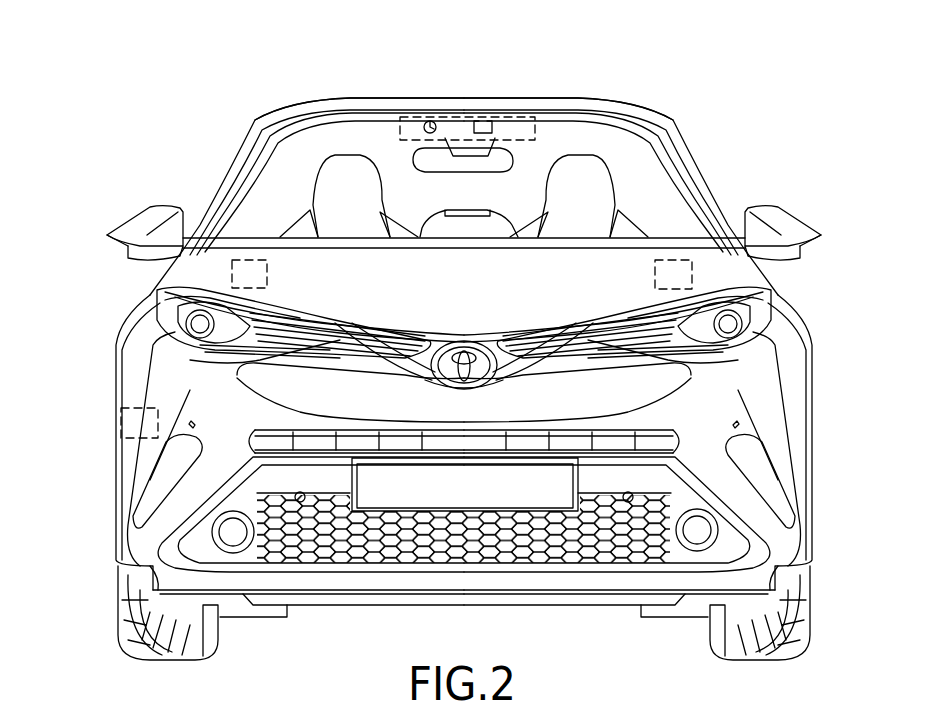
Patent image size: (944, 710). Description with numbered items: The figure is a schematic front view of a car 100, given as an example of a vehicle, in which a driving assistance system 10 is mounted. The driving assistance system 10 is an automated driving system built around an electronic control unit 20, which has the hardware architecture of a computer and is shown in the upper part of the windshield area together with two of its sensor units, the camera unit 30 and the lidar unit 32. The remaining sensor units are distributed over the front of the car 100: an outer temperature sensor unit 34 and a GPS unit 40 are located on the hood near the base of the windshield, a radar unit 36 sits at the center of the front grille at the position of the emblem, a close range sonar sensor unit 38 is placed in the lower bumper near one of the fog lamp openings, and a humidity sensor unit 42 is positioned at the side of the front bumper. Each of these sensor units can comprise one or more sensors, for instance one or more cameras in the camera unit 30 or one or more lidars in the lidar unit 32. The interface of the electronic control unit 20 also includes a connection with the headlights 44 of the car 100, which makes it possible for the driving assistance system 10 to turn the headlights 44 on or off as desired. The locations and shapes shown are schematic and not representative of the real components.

The car 100 is at (125, 97).
The driving assistance system 10 is at (245, 130).
The electronic control unit 20 is at (543, 137).
The camera unit 30 is at (427, 116).
The lidar unit 32 is at (484, 118).
The outer temperature sensor unit 34 is at (668, 279).
The radar unit 36 is at (497, 372).
The close range sonar sensor unit 38 is at (695, 536).
The GPS unit 40 is at (252, 279).
The humidity sensor unit 42 is at (133, 415).
The headlights 44 is at (732, 322).